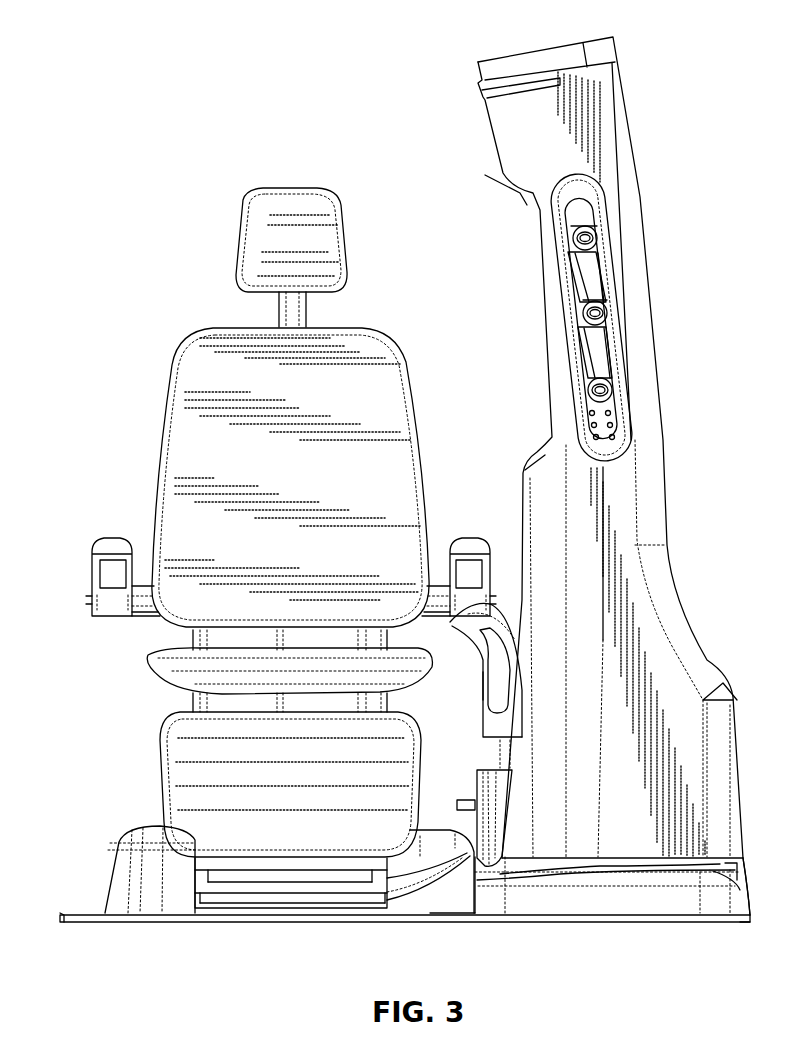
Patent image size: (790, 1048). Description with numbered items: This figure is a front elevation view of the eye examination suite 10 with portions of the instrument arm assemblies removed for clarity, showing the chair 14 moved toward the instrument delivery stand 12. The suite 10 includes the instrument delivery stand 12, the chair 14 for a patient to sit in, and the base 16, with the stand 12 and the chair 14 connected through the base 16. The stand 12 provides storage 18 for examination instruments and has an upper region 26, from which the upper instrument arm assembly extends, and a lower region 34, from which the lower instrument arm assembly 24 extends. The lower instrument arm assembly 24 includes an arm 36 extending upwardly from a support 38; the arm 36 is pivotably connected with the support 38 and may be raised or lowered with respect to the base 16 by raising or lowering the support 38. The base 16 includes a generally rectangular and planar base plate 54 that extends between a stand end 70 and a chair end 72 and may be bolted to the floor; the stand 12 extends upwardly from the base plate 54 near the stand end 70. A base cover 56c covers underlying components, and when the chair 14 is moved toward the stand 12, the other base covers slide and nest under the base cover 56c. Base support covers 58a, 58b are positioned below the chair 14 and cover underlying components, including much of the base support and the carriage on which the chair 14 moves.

The eye examination suite 10 is at (271, 53).
The instrument delivery stand 12 is at (633, 133).
The chair 14 is at (180, 355).
The base 16 is at (527, 900).
The storage 18 is at (597, 234).
The lower instrument arm assembly 24 is at (506, 624).
The upper region 26 is at (618, 44).
The lower region 34 is at (737, 863).
The arm 36 is at (482, 682).
The support 38 is at (480, 773).
The base plate 54 is at (313, 920).
The base cover 56c is at (452, 903).
The base support cover 58a is at (427, 825).
The base support cover 58b is at (120, 838).
The stand end 70 is at (745, 923).
The chair end 72 is at (60, 917).